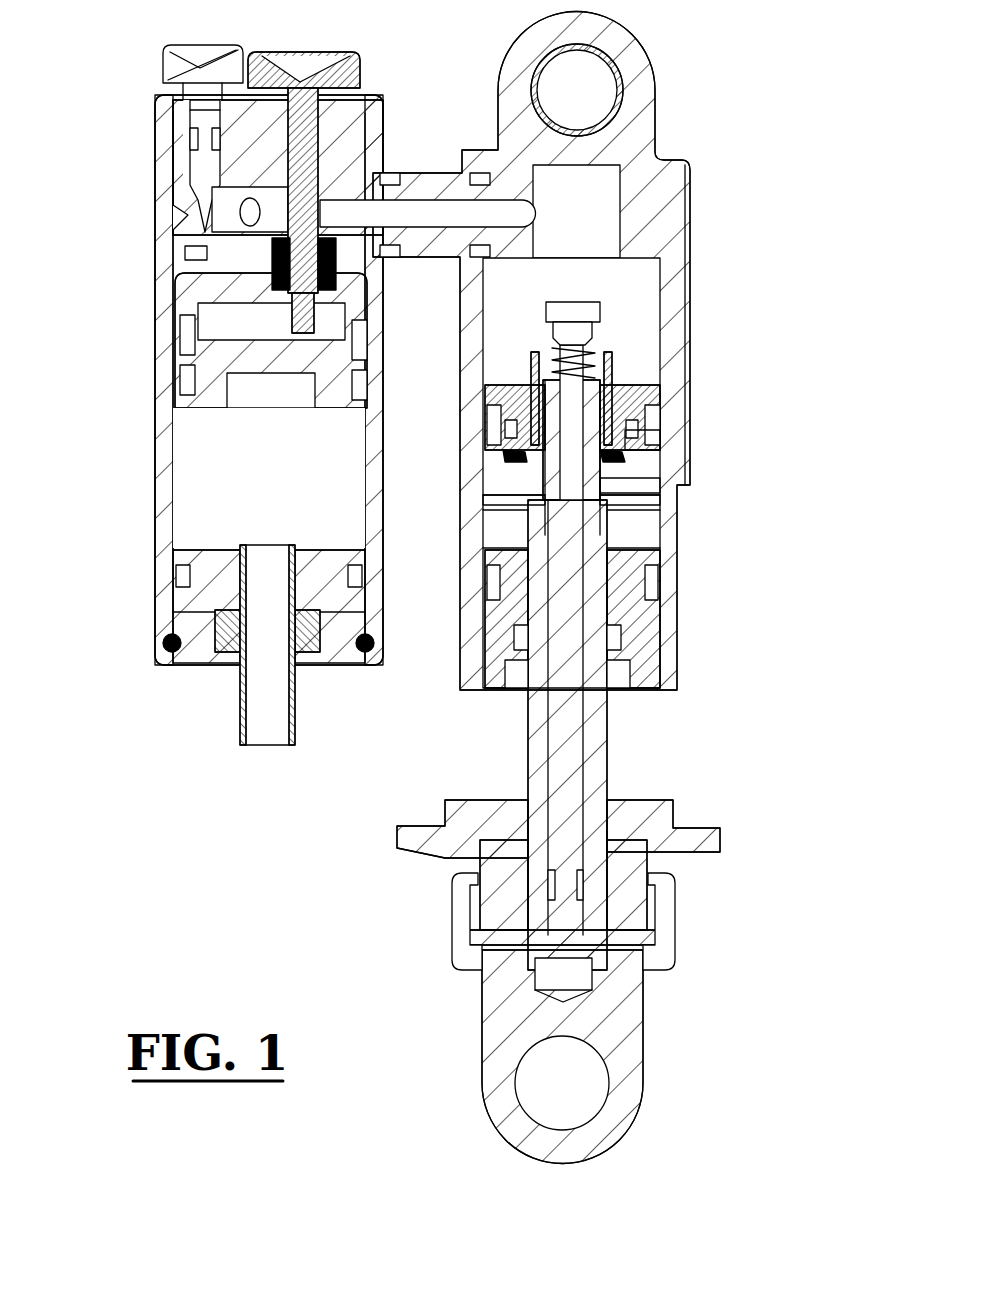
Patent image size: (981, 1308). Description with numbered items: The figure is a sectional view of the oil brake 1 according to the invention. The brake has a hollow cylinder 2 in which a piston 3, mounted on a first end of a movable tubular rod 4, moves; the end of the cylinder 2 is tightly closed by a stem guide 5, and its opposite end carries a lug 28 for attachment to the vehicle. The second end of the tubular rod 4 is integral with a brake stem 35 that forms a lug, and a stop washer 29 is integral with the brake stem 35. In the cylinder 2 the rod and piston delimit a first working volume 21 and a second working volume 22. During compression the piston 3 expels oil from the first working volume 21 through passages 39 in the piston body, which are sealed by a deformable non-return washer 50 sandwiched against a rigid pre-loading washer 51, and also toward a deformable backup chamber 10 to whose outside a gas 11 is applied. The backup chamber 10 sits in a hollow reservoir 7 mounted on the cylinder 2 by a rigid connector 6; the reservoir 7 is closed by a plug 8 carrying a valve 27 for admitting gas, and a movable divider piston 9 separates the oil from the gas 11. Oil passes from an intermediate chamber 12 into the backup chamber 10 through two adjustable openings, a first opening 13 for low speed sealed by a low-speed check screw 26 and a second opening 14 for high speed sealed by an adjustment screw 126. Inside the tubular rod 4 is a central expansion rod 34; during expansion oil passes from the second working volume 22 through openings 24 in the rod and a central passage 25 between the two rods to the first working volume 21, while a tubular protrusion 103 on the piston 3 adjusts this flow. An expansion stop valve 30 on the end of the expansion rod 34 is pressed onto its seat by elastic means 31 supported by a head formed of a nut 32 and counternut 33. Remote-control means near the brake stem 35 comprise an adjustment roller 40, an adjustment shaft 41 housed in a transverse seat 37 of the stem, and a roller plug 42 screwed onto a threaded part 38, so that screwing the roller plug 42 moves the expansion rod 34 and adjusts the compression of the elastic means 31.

The shock absorber 1 is at (296, 830).
The hollow cylinder 2 is at (670, 220).
The piston 3 is at (488, 395).
The movable tubular rod 4 is at (595, 764).
The stem guide 5 is at (625, 648).
The rigid connector 6 is at (428, 183).
The reservoir 7 is at (172, 218).
The plug 8 is at (190, 607).
The divider piston 9 is at (205, 405).
The backup chamber 10 is at (198, 292).
The gas 11 is at (190, 490).
The intermediate chamber 12 is at (220, 202).
The first opening 13 is at (188, 254).
The second opening 14 is at (205, 262).
The first working volume 21 is at (640, 270).
The second working volume 22 is at (648, 502).
The opening 24 is at (540, 500).
The central passage 25 is at (615, 485).
The low-speed check screw 26 is at (168, 55).
The valve 27 is at (240, 652).
The lug 28 is at (640, 68).
The stop washer 29 is at (440, 838).
The expansion stop valve 30 is at (490, 428).
The elastic means 31 is at (590, 352).
The nut 32 is at (600, 318).
The counternut 33 is at (593, 335).
The expansion rod 34 is at (568, 806).
The brake stem 35 is at (625, 1042).
The transverse seat 37 is at (500, 960).
The threaded part 38 is at (470, 900).
The passages 39 is at (625, 402).
The adjustment roller 40 is at (657, 968).
The adjustment shaft 41 is at (485, 940).
The roller plug 42 is at (662, 915).
The non-return washer 50 is at (640, 437).
The pre-loading washer 51 is at (642, 468).
The tubular protrusion 103 is at (528, 353).
The adjustment screw 126 is at (403, 58).